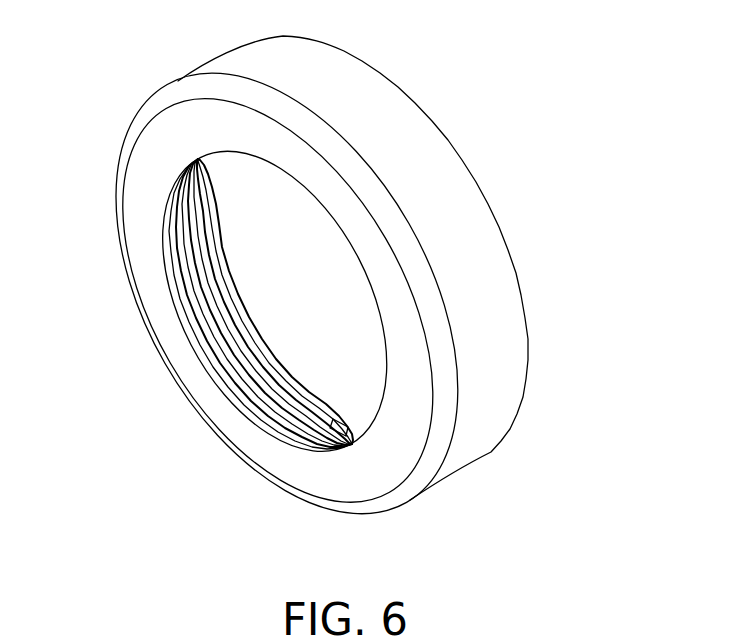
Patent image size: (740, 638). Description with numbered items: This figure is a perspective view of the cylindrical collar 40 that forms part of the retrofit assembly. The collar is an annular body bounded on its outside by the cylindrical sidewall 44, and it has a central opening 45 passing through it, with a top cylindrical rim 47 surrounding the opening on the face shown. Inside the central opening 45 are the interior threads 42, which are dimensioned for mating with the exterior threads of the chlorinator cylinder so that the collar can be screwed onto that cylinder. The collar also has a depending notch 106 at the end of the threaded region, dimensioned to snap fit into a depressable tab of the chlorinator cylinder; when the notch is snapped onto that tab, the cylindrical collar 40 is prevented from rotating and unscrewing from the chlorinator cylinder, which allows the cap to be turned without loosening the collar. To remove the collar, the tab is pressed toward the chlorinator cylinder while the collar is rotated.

The cylindrical collar 40 is at (330, 294).
The interior threads 42 is at (238, 315).
The cylindrical sidewall 44 is at (508, 315).
The central opening 45 is at (224, 183).
The top cylindrical rim 47 is at (330, 477).
The depending notch 106 is at (334, 424).